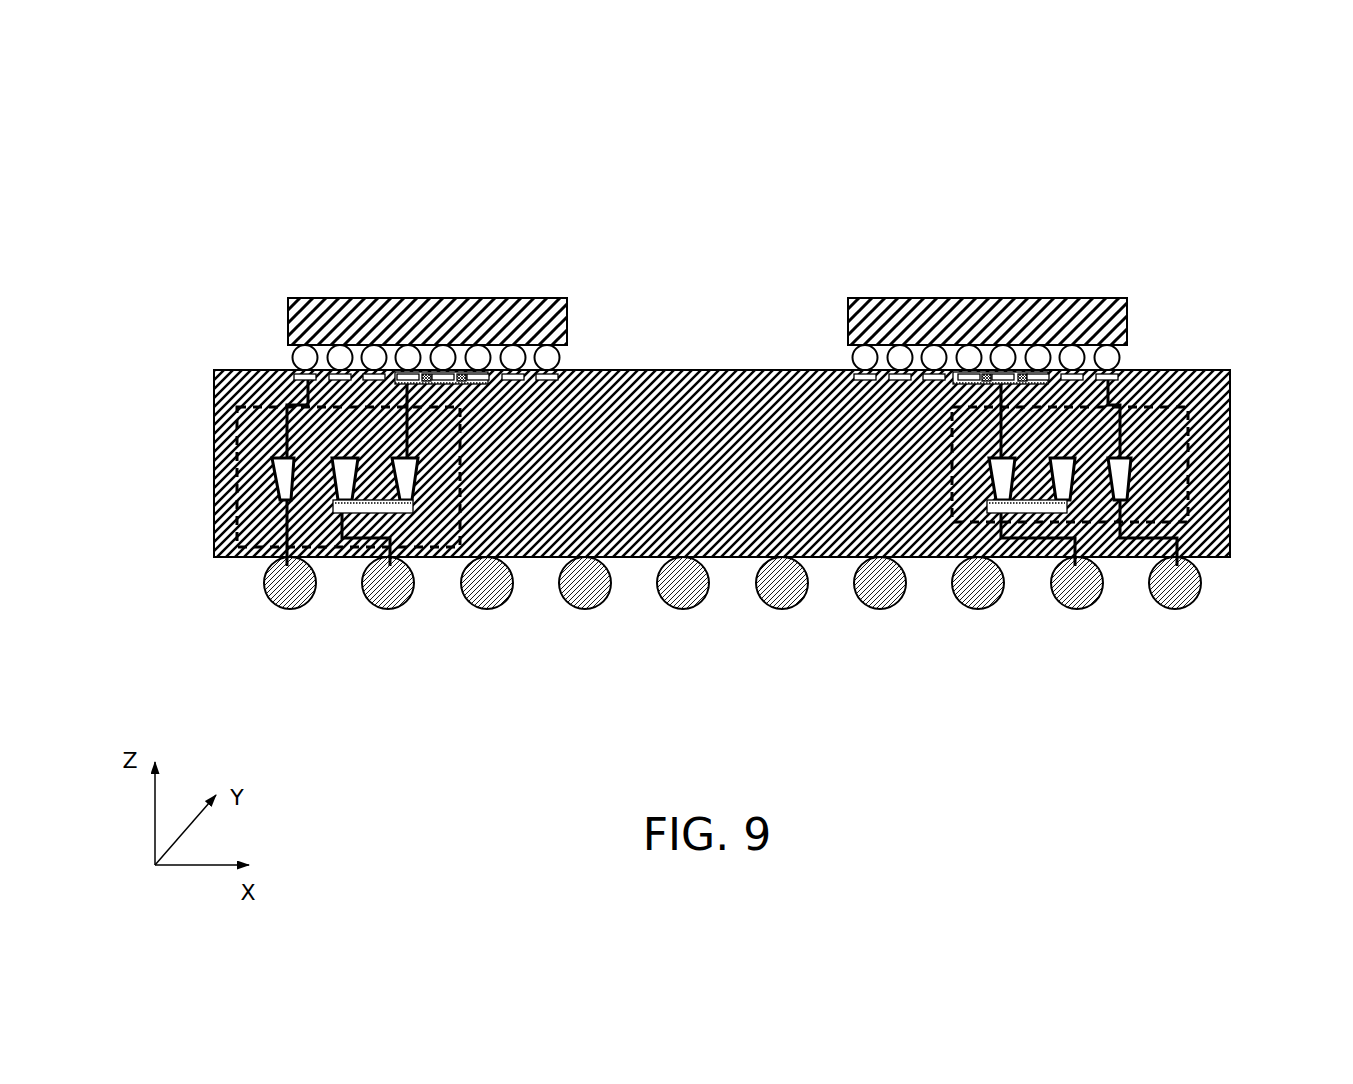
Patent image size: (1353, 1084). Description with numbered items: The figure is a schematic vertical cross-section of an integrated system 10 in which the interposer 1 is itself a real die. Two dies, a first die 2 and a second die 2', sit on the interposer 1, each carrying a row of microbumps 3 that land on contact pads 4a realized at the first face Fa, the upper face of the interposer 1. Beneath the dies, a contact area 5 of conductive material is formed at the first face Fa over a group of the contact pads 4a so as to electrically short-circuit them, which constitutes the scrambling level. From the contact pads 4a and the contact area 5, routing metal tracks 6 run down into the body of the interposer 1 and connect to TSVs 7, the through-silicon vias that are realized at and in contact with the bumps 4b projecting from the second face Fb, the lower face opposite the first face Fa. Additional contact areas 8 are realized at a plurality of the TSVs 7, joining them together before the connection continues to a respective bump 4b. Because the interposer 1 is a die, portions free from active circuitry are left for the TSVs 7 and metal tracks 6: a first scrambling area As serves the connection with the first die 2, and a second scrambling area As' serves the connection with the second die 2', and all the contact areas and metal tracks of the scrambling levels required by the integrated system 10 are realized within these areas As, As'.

The interposer 1 is at (1157, 378).
The first die 2 is at (427, 276).
The second die 2' is at (987, 256).
The microbumps 3 is at (298, 355).
The contact pads 4a is at (375, 372).
The bumps 4b is at (291, 574).
The contact area 5 is at (461, 372).
The routing metal tracks 6 is at (280, 440).
The TSVs 7 is at (405, 482).
The additional contact areas 8 is at (355, 545).
The integrated system 10 is at (1132, 193).
The first scrambling area As is at (268, 484).
The second scrambling area As' is at (1139, 452).
The first face Fa is at (252, 369).
The second face Fb is at (252, 562).